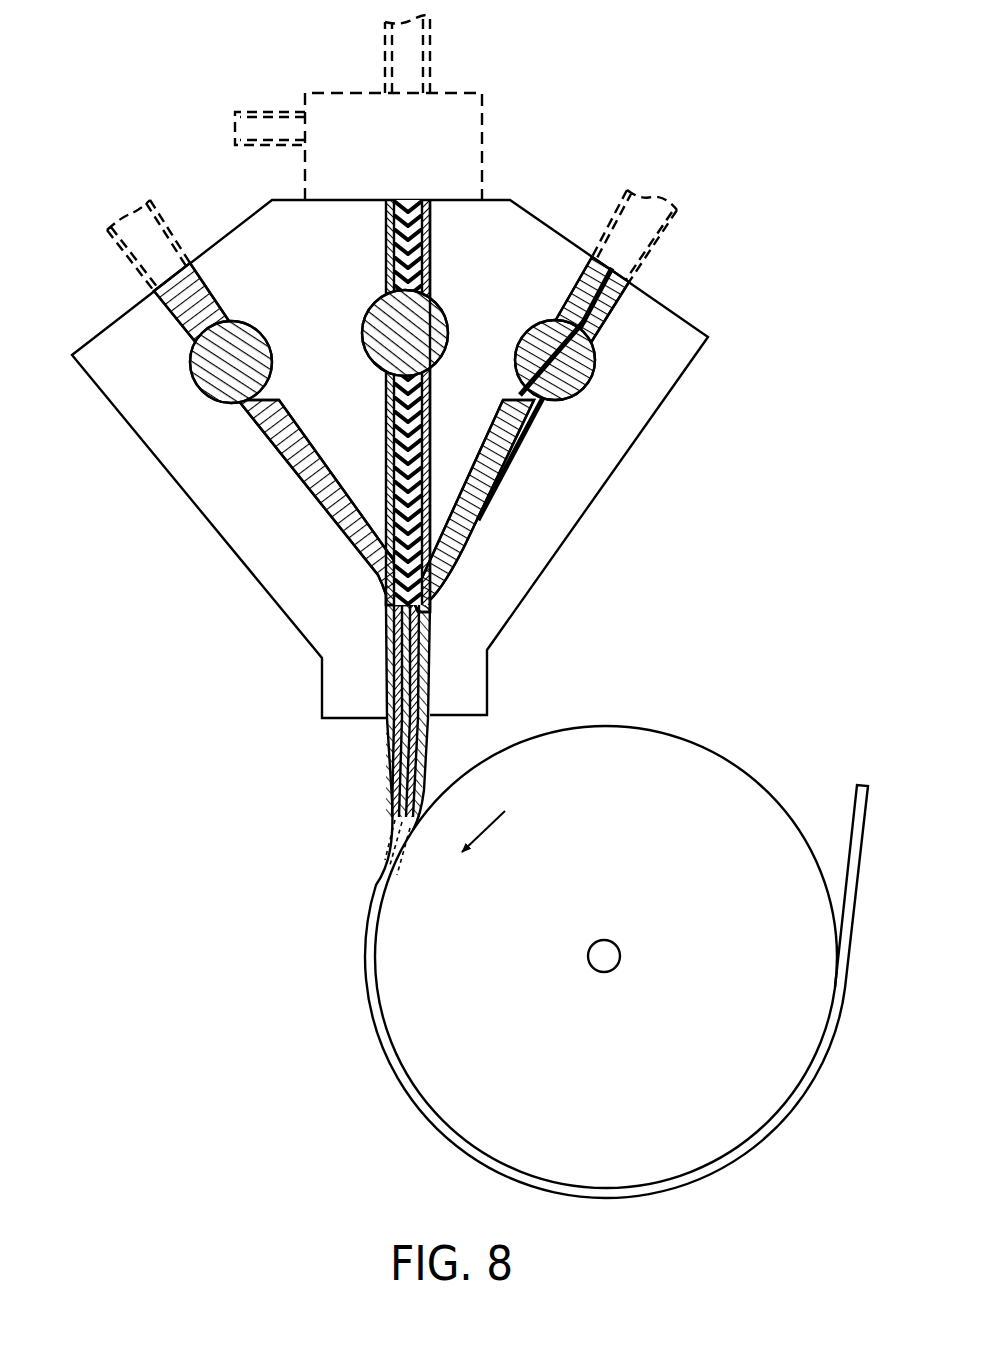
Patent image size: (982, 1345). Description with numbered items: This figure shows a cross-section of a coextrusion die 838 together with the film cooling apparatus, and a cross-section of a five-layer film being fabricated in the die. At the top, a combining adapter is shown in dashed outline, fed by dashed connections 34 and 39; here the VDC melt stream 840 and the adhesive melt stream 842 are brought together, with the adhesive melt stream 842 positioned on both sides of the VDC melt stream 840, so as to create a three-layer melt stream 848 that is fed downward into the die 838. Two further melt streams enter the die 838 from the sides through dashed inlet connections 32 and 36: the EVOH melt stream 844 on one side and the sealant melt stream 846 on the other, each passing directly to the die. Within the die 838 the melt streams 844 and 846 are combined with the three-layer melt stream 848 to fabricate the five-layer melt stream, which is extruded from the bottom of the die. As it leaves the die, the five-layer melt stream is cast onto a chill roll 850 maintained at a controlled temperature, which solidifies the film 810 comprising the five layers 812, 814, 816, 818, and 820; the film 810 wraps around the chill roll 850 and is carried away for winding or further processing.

The first extruder feed conduit 32 is at (120, 253).
The second extruder feed conduit 34 is at (431, 34).
The third extruder feed conduit 36 is at (667, 242).
The auxiliary feed conduit 39 is at (284, 108).
The film 810 is at (429, 1128).
The layer 812 is at (397, 743).
The layer 814 is at (396, 760).
The layer 816 is at (392, 783).
The layer 818 is at (420, 767).
The layer 820 is at (418, 817).
The die 838 is at (642, 437).
The VDC melt stream 840 is at (390, 365).
The adhesive melt stream 842 is at (388, 200).
The melt stream 844 is at (175, 318).
The melt stream 846 is at (607, 293).
The 3-layer melt stream 848 is at (445, 243).
The chill roll 850 is at (738, 760).